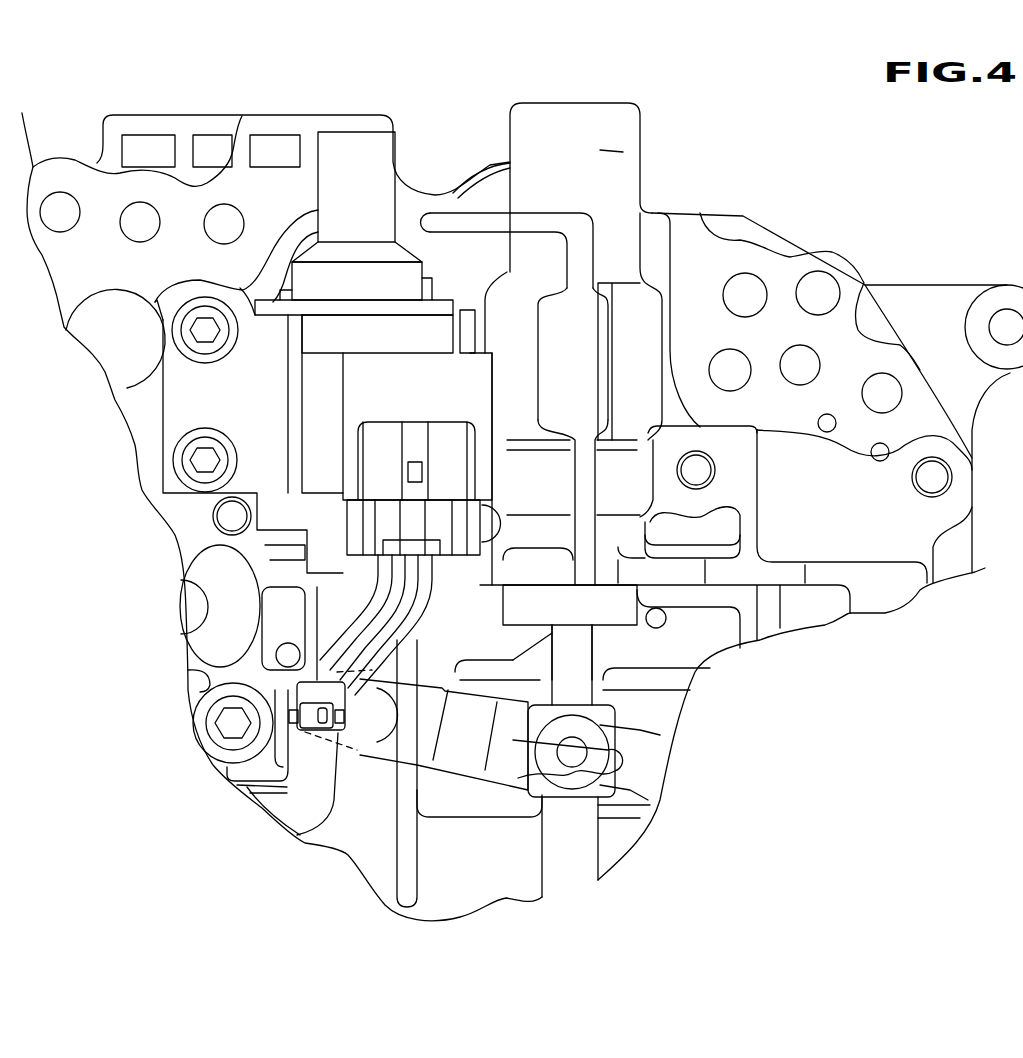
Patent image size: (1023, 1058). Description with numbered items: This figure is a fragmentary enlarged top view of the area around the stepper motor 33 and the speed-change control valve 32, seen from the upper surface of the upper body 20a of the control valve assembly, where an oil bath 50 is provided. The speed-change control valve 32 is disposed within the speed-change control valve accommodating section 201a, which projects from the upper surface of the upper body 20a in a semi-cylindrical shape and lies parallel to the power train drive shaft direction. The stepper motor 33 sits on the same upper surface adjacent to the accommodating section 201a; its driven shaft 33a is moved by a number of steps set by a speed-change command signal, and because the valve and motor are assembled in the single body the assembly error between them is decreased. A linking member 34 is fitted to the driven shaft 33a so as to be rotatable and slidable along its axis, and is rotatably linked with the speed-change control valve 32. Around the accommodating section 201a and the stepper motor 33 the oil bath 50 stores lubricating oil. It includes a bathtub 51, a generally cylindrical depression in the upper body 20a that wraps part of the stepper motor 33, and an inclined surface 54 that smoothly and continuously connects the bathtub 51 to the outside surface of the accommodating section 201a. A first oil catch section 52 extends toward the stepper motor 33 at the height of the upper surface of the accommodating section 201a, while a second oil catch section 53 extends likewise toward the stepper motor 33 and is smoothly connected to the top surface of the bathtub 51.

The upper body 20a is at (185, 521).
The speed-change control valve 32 is at (620, 103).
The speed-change control valve accommodating section 201a is at (623, 152).
The stepper motor 33 is at (337, 163).
The driven shaft 33a is at (362, 740).
The linking member 34 is at (665, 730).
The oil bath 50 is at (480, 208).
The bathtub 51 is at (433, 270).
The first oil catch section 52 is at (497, 222).
The second oil catch section 53 is at (487, 578).
The inclined surface 54 is at (483, 262).